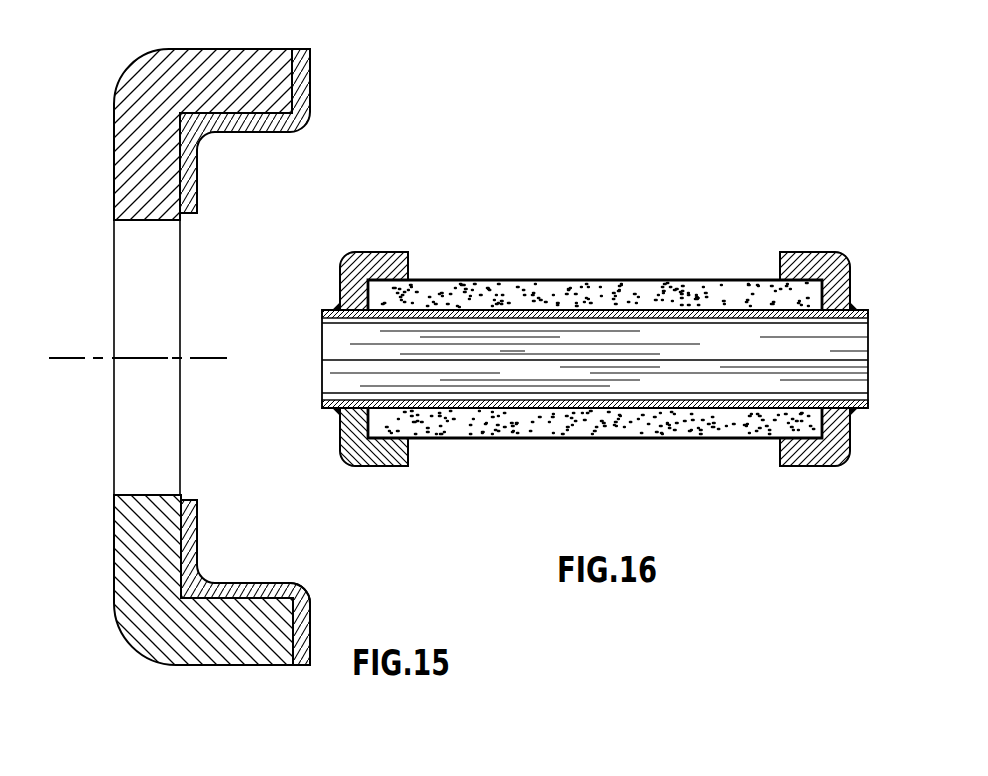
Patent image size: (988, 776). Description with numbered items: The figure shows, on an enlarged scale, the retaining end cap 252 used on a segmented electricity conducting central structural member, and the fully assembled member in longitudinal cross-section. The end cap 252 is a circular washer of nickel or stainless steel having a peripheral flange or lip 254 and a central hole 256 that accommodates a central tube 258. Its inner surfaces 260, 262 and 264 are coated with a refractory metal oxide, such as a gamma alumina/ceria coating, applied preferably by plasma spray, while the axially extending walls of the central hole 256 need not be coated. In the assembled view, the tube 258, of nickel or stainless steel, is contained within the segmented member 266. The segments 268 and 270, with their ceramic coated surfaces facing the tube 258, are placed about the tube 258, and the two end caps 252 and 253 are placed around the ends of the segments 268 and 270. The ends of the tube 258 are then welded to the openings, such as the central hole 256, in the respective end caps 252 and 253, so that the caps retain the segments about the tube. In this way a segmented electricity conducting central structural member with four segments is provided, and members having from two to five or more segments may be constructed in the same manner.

In FIG. 15, the end cap 252 is at (222, 382).
In FIG. 16, the end cap 252 is at (405, 457).
In FIG. 16, the end cap 253 is at (818, 467).
In FIG. 15, the peripheral flange 254 is at (233, 97).
In FIG. 15, the central hole 256 is at (172, 382).
In FIG. 16, the central tube 258 is at (869, 410).
In FIG. 15, the inner surface 260 is at (172, 382).
In FIG. 15, the inner surface 262 is at (230, 602).
In FIG. 15, the inner surface 264 is at (305, 610).
In FIG. 16, the segmented member 266 is at (445, 290).
In FIG. 16, the segment 268 is at (613, 280).
In FIG. 16, the segment 270 is at (572, 428).